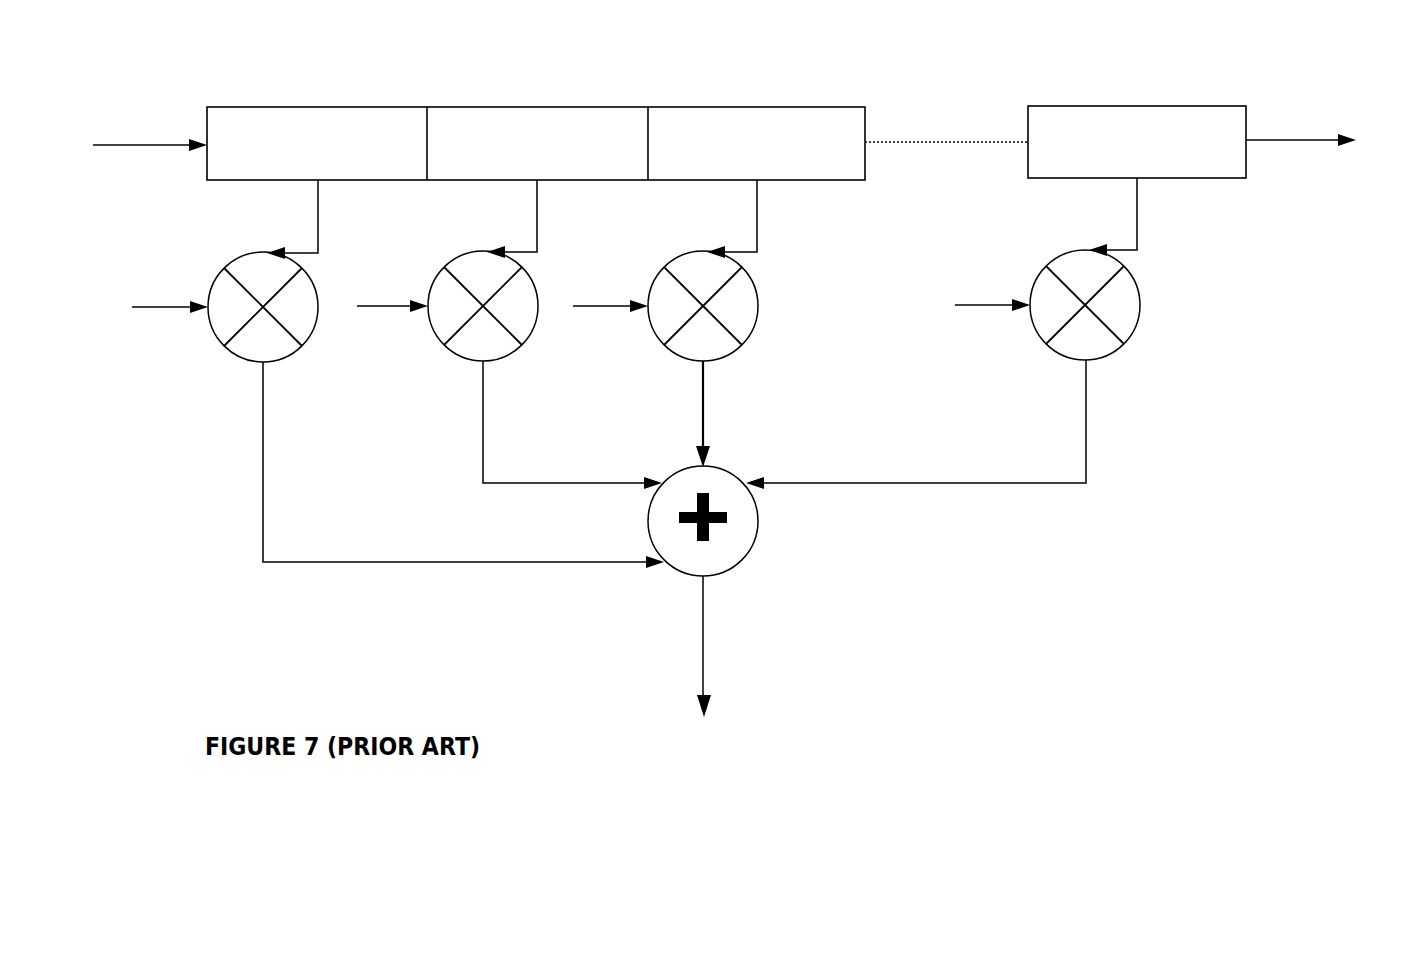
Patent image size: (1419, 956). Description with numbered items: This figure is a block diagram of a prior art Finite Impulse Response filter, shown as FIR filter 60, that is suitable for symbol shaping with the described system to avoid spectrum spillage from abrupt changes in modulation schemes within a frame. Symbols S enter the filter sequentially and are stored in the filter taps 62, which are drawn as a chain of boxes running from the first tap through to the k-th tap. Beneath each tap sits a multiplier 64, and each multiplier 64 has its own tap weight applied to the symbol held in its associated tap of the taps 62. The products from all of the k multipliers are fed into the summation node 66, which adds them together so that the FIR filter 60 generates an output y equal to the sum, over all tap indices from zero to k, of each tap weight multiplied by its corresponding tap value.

The FIR filter 60 is at (926, 620).
The filter taps 62 is at (318, 107).
The multiplier 64 is at (226, 268).
The summation node 66 is at (680, 470).